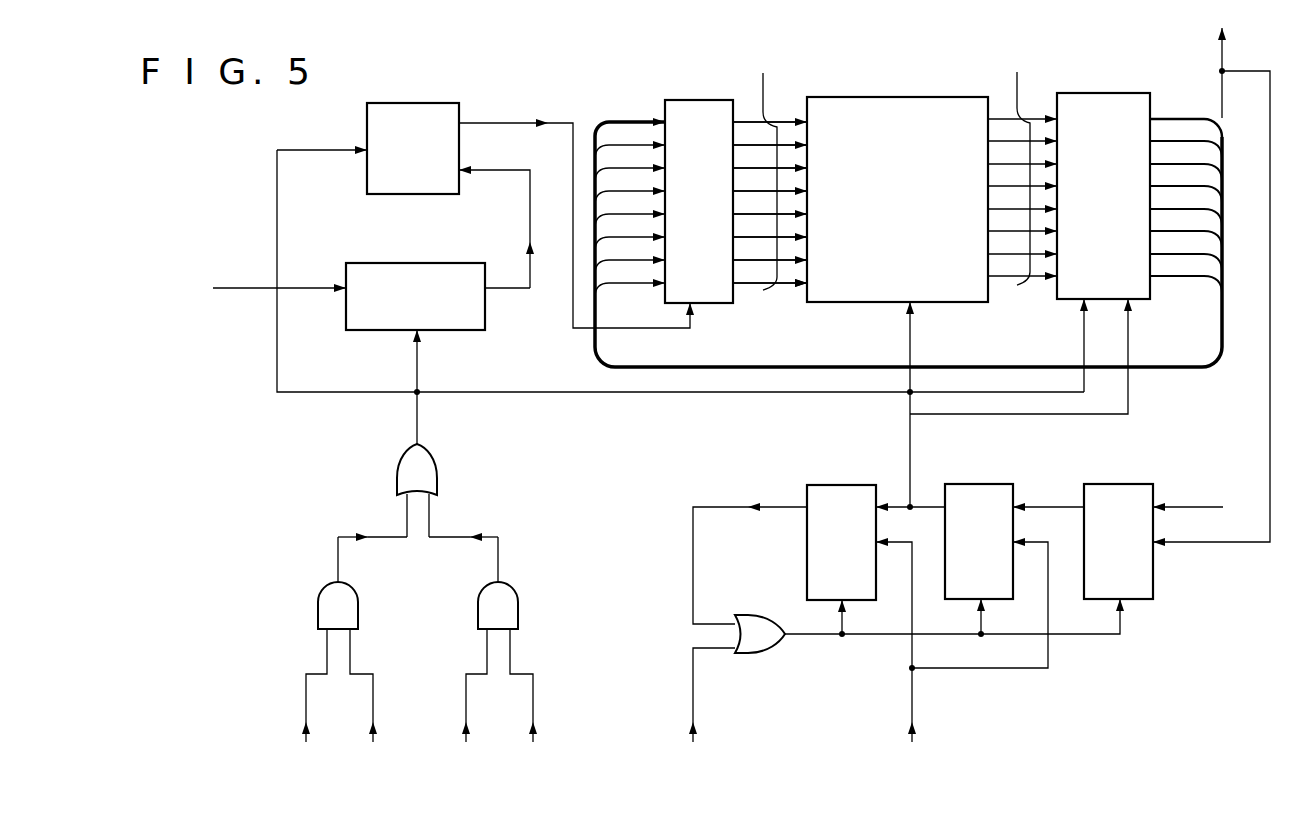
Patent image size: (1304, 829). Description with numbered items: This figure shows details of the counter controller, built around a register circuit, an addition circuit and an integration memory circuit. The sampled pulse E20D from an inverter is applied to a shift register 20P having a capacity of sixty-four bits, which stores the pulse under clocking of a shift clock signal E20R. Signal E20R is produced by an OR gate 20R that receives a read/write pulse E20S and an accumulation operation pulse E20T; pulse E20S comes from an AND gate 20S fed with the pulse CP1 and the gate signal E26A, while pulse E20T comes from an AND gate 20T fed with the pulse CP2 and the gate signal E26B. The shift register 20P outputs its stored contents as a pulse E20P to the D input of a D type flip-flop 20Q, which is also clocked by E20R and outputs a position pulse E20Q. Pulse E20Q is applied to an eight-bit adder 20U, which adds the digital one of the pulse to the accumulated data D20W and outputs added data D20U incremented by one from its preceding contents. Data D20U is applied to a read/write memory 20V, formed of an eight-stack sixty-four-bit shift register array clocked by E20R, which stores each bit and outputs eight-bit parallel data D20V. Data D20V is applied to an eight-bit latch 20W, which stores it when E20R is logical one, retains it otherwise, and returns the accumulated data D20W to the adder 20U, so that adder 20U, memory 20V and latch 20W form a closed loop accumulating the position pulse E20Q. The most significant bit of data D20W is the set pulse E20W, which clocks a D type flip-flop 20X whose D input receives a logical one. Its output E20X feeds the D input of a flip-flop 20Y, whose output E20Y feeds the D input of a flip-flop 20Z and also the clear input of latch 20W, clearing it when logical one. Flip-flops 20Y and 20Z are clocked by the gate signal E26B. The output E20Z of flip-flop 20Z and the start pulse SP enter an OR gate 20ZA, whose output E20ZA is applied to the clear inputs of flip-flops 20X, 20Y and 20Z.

The D type flip-flop 20Q is at (398, 103).
The shift register 20P is at (370, 331).
The OR gate 20R is at (438, 470).
The AND gate 20S is at (368, 588).
The AND gate 20T is at (528, 588).
The 8-bit adder 20U is at (690, 100).
The read/write memory 20V is at (878, 97).
The 8-bit latch 20W is at (1064, 93).
The D type flip-flop 20X is at (1087, 484).
The D type flip-flop 20Y is at (985, 484).
The D type flip-flop 20Z is at (810, 485).
The OR gate 20ZA is at (778, 652).
The position pulse E20Q is at (541, 114).
The shift register output pulse E20P is at (525, 240).
The sampled pulse E20D is at (255, 275).
The shift clock signal E20R is at (416, 406).
The read/write pulse E20S is at (337, 545).
The accumulation operation pulse E20T is at (480, 530).
The set pulse E20W is at (1226, 283).
The flip-flop output E20X is at (1046, 500).
The flip-flop output E20Y is at (1130, 388).
The flip-flop output E20Z is at (756, 504).
The clear signal E20ZA is at (842, 640).
The added data D20U is at (783, 177).
The 8-bit parallel data D20V is at (1022, 162).
The accumulated data D20W is at (770, 367).
The clock pulse CP1 is at (311, 746).
The clock pulse CP2 is at (468, 746).
The gate signal E26A is at (380, 746).
The gate signal E26B is at (779, 656).
The start pulse SP is at (709, 706).